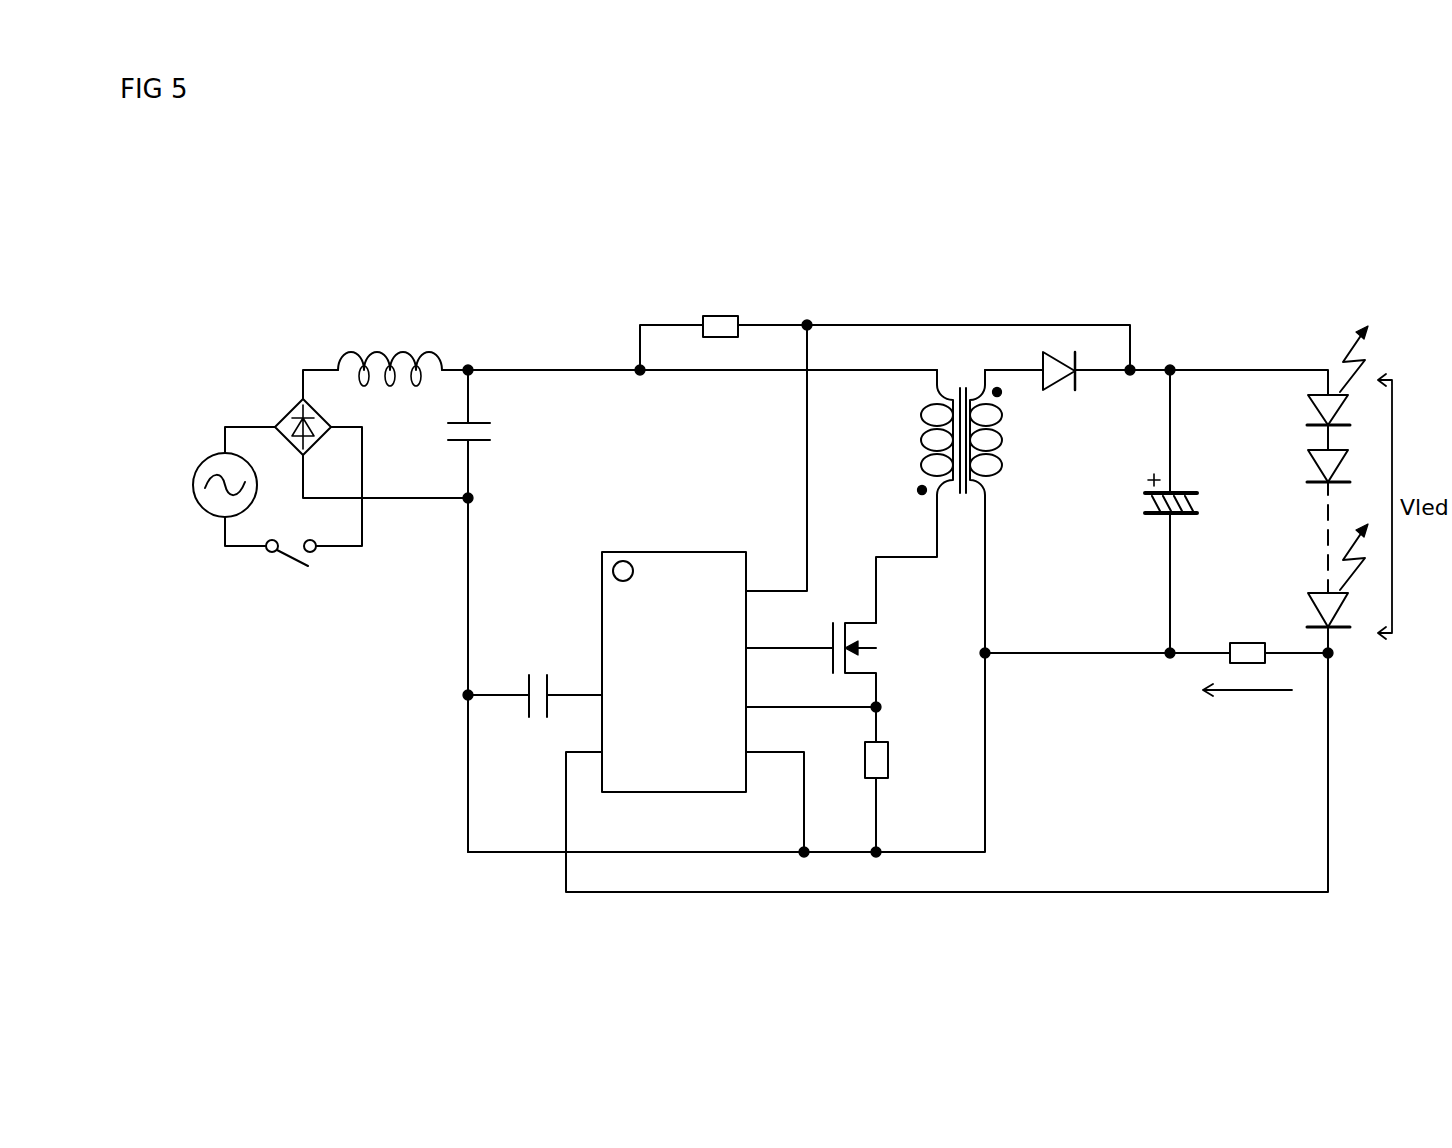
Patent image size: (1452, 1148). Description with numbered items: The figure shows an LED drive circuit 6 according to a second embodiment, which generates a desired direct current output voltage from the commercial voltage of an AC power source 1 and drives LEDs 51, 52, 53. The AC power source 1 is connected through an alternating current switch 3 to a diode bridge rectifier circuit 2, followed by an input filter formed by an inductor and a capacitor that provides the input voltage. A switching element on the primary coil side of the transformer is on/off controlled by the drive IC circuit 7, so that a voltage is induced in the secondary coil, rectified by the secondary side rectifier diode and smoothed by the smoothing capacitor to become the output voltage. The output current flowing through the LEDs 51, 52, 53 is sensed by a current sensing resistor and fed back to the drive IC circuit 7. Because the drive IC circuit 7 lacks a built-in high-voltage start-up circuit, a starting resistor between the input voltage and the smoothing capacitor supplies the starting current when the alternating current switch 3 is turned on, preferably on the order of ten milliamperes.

The AC power source 1 is at (193, 485).
The diode bridge rectifier circuit 2 is at (275, 420).
The alternating current switch 3 is at (296, 562).
The LED drive circuit 6 is at (481, 309).
The drive IC circuit 7 is at (680, 552).
The LED 51 is at (1310, 405).
The LED 52 is at (1310, 460).
The LED 53 is at (1310, 600).